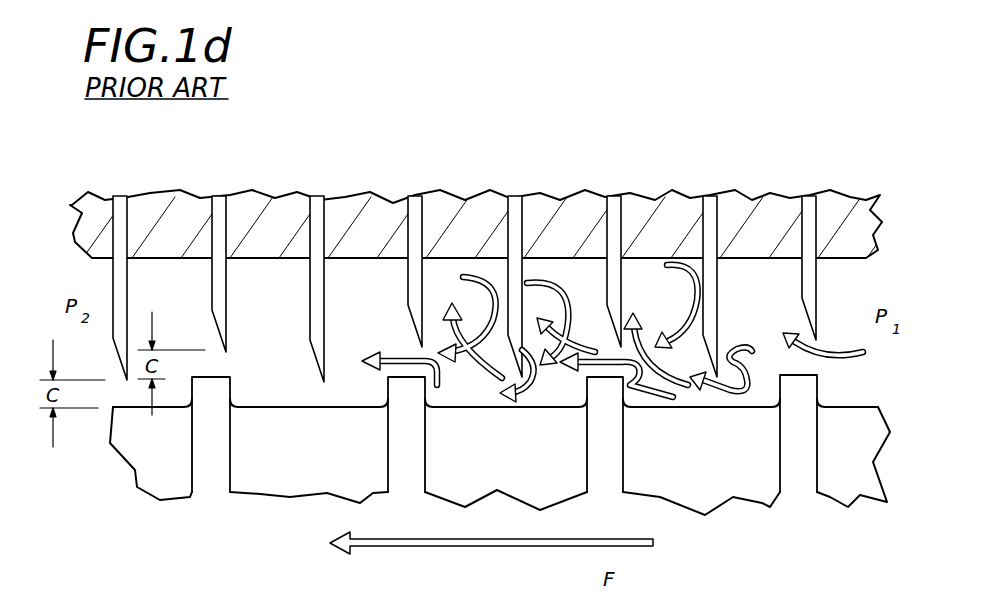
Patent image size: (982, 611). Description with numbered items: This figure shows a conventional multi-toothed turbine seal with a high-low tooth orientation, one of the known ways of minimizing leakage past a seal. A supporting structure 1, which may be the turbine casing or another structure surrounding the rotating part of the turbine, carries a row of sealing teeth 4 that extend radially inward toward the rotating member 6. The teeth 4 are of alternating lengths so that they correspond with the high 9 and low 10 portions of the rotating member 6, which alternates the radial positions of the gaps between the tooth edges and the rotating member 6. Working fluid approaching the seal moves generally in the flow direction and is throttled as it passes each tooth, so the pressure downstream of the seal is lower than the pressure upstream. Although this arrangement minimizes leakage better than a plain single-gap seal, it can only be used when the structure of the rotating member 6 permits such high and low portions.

The supporting structure 1 is at (788, 199).
The tooth portion 4 is at (812, 283).
The rotating member 6 is at (283, 475).
The high portion 9 is at (800, 402).
The low portion 10 is at (732, 423).